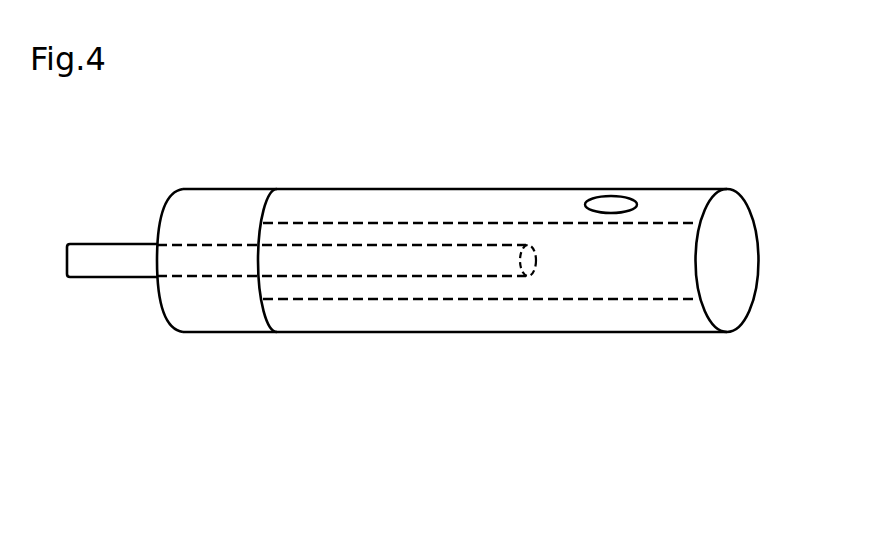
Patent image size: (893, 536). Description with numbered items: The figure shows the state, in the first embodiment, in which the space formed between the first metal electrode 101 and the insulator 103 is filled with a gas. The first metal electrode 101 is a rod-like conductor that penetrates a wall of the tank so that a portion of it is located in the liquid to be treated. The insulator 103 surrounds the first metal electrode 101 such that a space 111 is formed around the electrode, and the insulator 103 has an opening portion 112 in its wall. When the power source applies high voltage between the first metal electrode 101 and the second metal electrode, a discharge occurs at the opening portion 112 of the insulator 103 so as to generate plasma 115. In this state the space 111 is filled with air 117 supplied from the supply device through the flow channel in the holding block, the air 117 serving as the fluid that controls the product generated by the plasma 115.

The first metal electrode 101 is at (126, 259).
The insulator 103 is at (410, 332).
The space 111 is at (668, 300).
The opening portion 112 is at (615, 202).
The plasma 115 is at (223, 300).
The air 117 is at (573, 288).